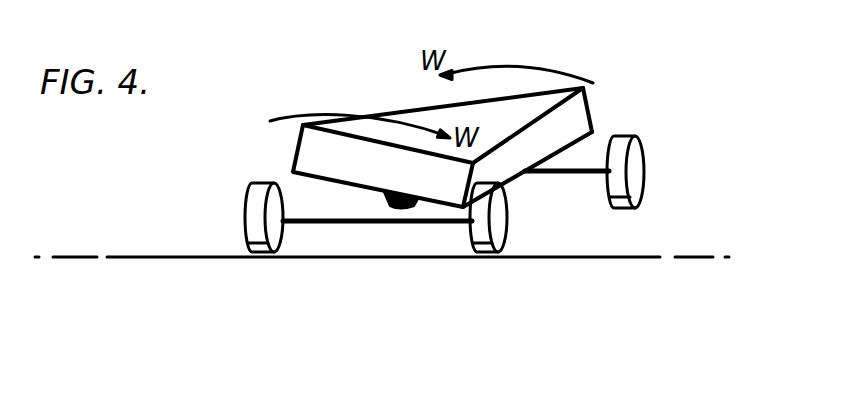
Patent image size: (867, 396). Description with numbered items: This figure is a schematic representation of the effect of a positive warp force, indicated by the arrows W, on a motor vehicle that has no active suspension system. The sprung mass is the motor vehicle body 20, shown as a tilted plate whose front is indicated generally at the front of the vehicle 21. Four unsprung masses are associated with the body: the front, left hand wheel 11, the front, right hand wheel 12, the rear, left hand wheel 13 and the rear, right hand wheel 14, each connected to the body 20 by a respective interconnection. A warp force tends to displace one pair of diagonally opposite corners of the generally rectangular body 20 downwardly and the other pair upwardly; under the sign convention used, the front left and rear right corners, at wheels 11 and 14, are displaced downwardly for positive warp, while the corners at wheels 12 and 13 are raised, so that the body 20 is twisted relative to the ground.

The front left hand wheel 11 is at (495, 228).
The front right hand wheel 12 is at (250, 222).
The rear left hand wheel 13 is at (637, 175).
The rear right hand wheel 14 is at (398, 208).
The motor vehicle body 20 is at (565, 128).
The front of the vehicle 21 is at (317, 153).